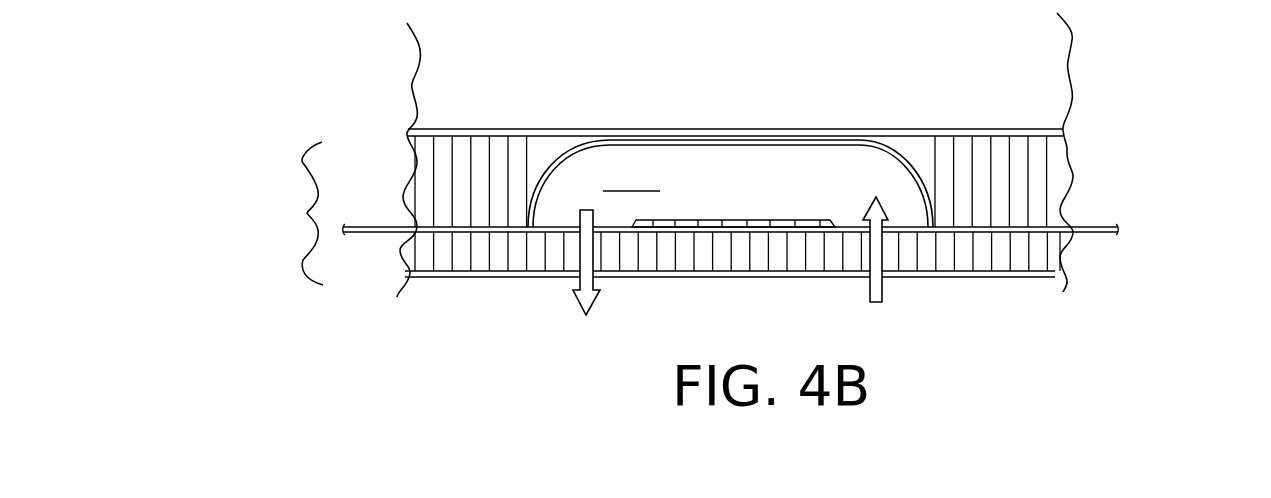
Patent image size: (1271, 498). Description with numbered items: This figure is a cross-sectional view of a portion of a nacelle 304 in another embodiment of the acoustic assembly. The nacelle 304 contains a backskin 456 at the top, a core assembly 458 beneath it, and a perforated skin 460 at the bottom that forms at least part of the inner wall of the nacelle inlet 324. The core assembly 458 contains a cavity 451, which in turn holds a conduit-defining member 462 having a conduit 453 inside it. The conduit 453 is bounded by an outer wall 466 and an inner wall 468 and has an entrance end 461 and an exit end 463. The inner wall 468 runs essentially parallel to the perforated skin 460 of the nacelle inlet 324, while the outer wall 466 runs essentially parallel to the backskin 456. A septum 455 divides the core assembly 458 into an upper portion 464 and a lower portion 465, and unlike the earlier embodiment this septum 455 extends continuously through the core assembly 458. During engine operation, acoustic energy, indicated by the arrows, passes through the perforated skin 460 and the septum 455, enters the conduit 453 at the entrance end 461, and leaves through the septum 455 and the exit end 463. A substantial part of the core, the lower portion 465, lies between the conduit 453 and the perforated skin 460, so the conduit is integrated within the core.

The nacelle 304 is at (410, 88).
The nacelle inlet 324 is at (710, 278).
The cavity 451 is at (542, 155).
The conduit 453 is at (631, 175).
The septum 455 is at (1103, 233).
The backskin 456 is at (750, 130).
The core assembly 458 is at (307, 213).
The perforated skin 460 is at (762, 278).
The entrance end 461 is at (908, 208).
The conduit-defining member 462 is at (912, 142).
The exit end 463 is at (557, 207).
The upper portion 464 is at (1077, 175).
The lower portion 465 is at (1063, 253).
The outer wall 466 is at (807, 147).
The inner wall 468 is at (692, 220).